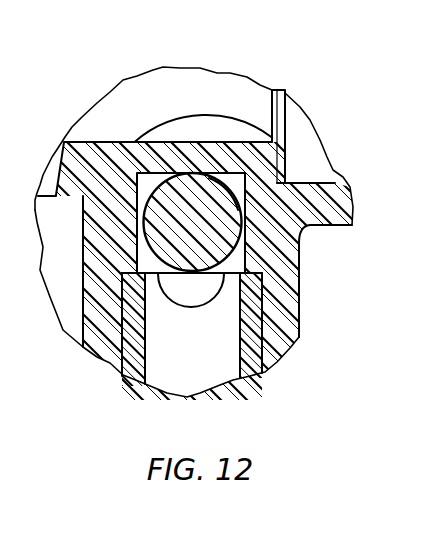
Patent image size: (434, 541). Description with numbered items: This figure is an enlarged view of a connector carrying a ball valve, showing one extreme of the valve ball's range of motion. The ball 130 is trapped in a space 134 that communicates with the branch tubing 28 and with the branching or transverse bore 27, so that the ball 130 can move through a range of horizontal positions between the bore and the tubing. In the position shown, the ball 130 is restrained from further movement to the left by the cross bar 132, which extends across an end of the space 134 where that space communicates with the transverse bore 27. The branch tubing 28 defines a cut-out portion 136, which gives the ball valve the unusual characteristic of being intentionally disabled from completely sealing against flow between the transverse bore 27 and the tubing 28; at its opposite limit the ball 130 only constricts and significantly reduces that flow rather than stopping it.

The branching bore 27 is at (223, 97).
The branch tubing 28 is at (237, 353).
The ball 130 is at (203, 219).
The cross bar 132 is at (213, 157).
The space 134 is at (222, 138).
The cut-out portion 136 is at (187, 306).